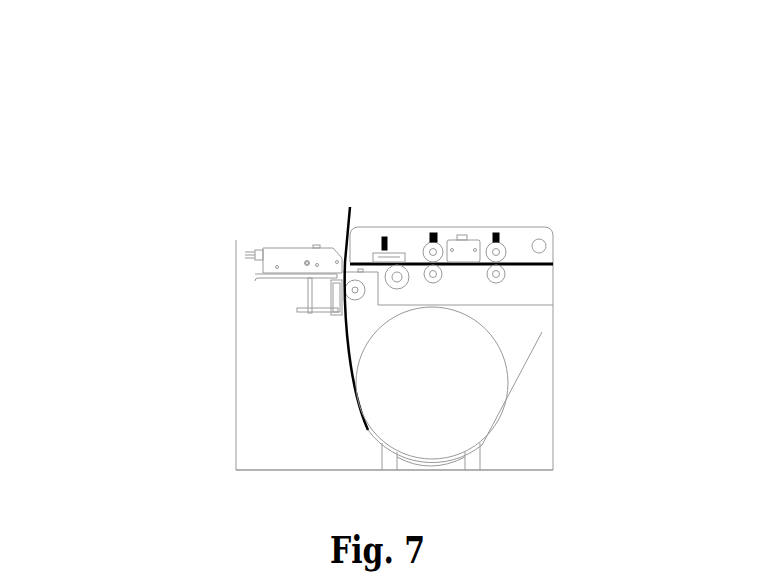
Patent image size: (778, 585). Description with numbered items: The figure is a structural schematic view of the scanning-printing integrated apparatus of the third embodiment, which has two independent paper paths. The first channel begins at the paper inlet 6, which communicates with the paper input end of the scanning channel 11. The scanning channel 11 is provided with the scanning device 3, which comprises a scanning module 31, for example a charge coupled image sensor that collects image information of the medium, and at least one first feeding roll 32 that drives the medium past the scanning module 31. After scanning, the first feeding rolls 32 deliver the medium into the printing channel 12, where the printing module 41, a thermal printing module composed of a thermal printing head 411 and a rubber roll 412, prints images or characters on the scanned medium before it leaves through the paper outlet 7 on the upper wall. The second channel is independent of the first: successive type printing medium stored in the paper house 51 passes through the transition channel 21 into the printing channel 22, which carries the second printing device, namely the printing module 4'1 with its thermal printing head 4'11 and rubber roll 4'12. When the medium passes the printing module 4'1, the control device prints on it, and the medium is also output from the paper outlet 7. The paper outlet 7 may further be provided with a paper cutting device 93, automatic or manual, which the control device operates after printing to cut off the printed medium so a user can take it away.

The scanning device 3 is at (483, 133).
The scanning module 31 is at (470, 250).
The first feeding roll 32 is at (436, 246).
The printing module 41 is at (361, 146).
The thermal printing head 411 is at (394, 258).
The rubber roll 412 is at (384, 277).
The printing channel 12 is at (408, 262).
The scanning channel 11 is at (513, 258).
The paper inlet 6 is at (553, 260).
The printing channel 22 is at (343, 317).
The transition channel 21 is at (347, 364).
The paper house 51 is at (387, 372).
The paper outlet 7 is at (345, 257).
The paper cutting device 93 is at (297, 260).
The printing module 4'1 is at (178, 247).
The rubber roll 4'12 is at (209, 230).
The thermal printing head 4'11 is at (209, 272).